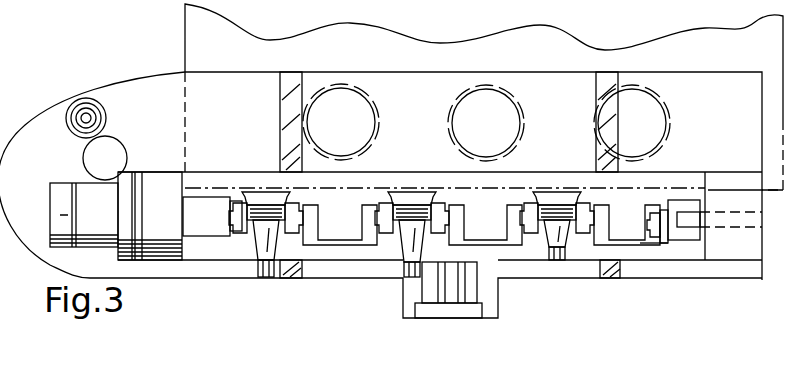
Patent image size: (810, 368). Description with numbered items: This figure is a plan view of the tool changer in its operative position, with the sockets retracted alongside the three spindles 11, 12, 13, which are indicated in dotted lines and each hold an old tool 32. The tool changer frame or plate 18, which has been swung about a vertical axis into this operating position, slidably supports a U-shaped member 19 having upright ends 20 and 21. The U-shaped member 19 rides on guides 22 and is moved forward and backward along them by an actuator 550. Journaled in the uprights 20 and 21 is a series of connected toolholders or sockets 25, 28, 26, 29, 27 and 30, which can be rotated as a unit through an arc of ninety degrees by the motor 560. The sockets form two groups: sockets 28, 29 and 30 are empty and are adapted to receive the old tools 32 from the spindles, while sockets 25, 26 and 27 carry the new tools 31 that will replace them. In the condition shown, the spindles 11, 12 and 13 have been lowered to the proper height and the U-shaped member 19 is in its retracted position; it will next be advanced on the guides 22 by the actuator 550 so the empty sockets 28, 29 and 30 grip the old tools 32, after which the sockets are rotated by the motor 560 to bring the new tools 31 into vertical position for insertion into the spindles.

The spindle 11 is at (338, 88).
The spindle 12 is at (485, 88).
The spindle 13 is at (634, 88).
The tool changer frame or plate 18 is at (688, 270).
The U-shaped member 19 is at (208, 186).
The upright end 20 is at (167, 260).
The upright end 21 is at (725, 243).
The guides 22 is at (292, 278).
The socket 25 is at (248, 260).
The socket 26 is at (402, 262).
The socket 27 is at (528, 213).
The empty socket 28 is at (327, 242).
The empty socket 29 is at (480, 262).
The empty socket 30 is at (657, 243).
The new tools 31 is at (280, 201).
The old tools 32 is at (343, 122).
The actuator 550 is at (423, 314).
The motor 560 is at (58, 193).